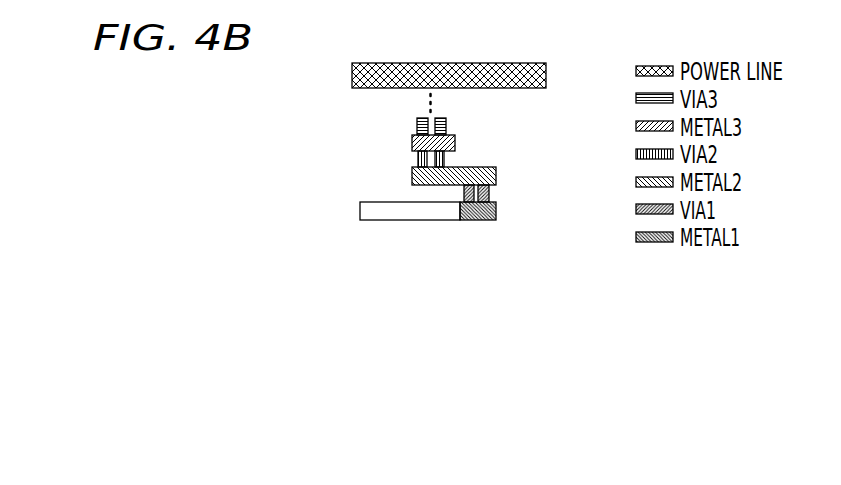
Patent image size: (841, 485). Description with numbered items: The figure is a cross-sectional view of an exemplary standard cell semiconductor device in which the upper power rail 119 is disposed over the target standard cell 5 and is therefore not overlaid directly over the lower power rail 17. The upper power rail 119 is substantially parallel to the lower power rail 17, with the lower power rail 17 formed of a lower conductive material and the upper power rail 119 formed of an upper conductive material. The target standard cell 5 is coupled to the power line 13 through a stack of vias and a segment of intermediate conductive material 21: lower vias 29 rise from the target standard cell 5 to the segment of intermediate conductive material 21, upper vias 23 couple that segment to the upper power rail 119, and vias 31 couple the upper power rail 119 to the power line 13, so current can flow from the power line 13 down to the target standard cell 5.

The power line 13 is at (352, 68).
The vias 31 is at (447, 125).
The upper power rail 119 is at (412, 144).
The upper vias 23 is at (444, 161).
The intermediate conductive material 21 is at (412, 177).
The lower vias 29 is at (489, 192).
The lower power rail 17 is at (482, 220).
The target standard cell 5 is at (358, 208).